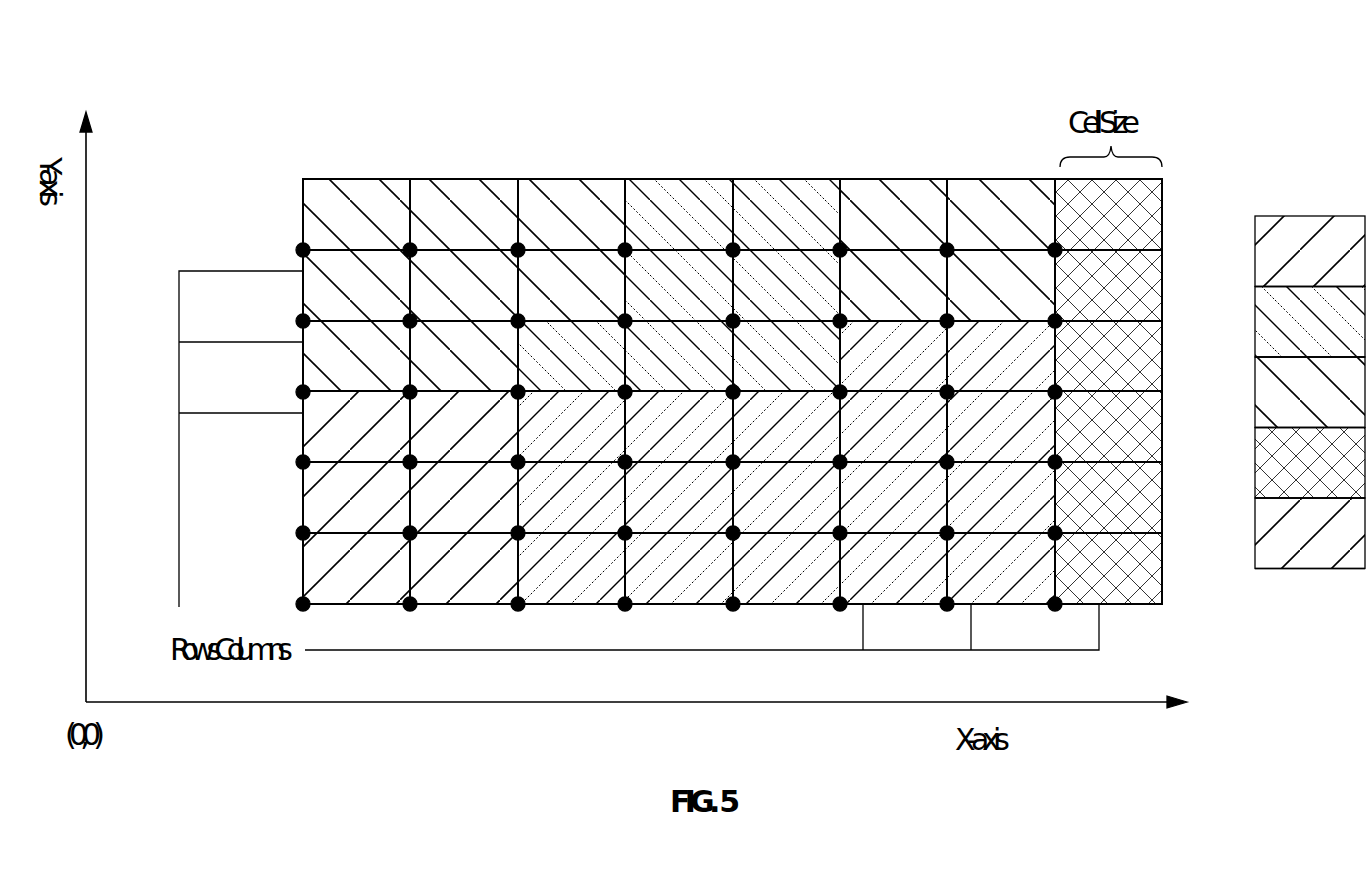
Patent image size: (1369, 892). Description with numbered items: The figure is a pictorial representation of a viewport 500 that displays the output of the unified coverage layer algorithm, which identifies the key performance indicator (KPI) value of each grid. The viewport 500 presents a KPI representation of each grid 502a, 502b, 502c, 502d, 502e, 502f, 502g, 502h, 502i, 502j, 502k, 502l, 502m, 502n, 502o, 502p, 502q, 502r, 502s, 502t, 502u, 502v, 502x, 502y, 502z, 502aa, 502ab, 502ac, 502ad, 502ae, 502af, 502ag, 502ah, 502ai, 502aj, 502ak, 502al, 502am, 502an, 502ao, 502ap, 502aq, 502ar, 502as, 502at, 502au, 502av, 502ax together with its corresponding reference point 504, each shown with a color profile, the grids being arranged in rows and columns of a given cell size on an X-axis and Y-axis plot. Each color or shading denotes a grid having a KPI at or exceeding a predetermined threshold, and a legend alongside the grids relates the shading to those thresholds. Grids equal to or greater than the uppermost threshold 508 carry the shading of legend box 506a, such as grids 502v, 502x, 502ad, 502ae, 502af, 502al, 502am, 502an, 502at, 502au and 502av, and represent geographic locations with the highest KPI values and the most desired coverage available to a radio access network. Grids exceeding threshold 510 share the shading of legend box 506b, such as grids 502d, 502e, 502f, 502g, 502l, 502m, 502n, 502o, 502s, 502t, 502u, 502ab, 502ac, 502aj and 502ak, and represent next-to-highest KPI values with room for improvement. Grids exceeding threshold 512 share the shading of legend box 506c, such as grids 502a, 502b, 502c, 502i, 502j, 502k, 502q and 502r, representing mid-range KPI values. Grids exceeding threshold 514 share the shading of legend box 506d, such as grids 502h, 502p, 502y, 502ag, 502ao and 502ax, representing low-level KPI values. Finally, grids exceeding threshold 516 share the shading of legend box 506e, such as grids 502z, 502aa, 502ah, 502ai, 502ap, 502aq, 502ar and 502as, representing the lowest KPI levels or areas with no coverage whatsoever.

The viewport 500 is at (205, 128).
The grid 502a is at (350, 215).
The grid 502b is at (457, 215).
The grid 502c is at (565, 215).
The grid 502d is at (672, 215).
The grid 502e is at (780, 215).
The grid 502f is at (887, 215).
The grid 502g is at (994, 215).
The grid 502h is at (1102, 215).
The grid 502i is at (350, 286).
The grid 502j is at (457, 286).
The grid 502k is at (565, 286).
The grid 502l is at (672, 286).
The grid 502m is at (780, 286).
The grid 502n is at (887, 286).
The grid 502o is at (994, 286).
The grid 502p is at (1102, 286).
The grid 502q is at (350, 357).
The grid 502r is at (457, 357).
The grid 502s is at (565, 357).
The grid 502t is at (672, 357).
The grid 502u is at (780, 357).
The grid 502v is at (887, 357).
The grid 502x is at (994, 357).
The grid 502y is at (1102, 357).
The grid 502z is at (350, 427).
The grid 502aa is at (457, 427).
The grid 502ab is at (565, 427).
The grid 502ac is at (672, 427).
The grid 502ad is at (780, 427).
The grid 502ae is at (887, 427).
The grid 502af is at (994, 427).
The grid 502ag is at (1102, 427).
The grid 502ah is at (350, 498).
The grid 502ai is at (457, 498).
The grid 502aj is at (565, 498).
The grid 502ak is at (672, 498).
The grid 502al is at (780, 498).
The grid 502am is at (887, 498).
The grid 502an is at (994, 498).
The grid 502ao is at (1102, 498).
The grid 502ap is at (350, 569).
The grid 502aq is at (457, 569).
The grid 502ar is at (565, 569).
The grid 502as is at (672, 569).
The grid 502at is at (780, 569).
The grid 502au is at (887, 569).
The grid 502av is at (994, 569).
The grid 502ax is at (1102, 569).
The reference point 504 is at (1055, 604).
The legend box 506a is at (1310, 251).
The legend box 506b is at (1310, 322).
The legend box 506c is at (1310, 392).
The legend box 506d is at (1310, 463).
The legend box 506e is at (1310, 533).
The uppermost threshold 508 is at (1238, 294).
The threshold 510 is at (1238, 365).
The threshold 512 is at (1238, 436).
The threshold 514 is at (1238, 506).
The threshold 516 is at (1238, 576).